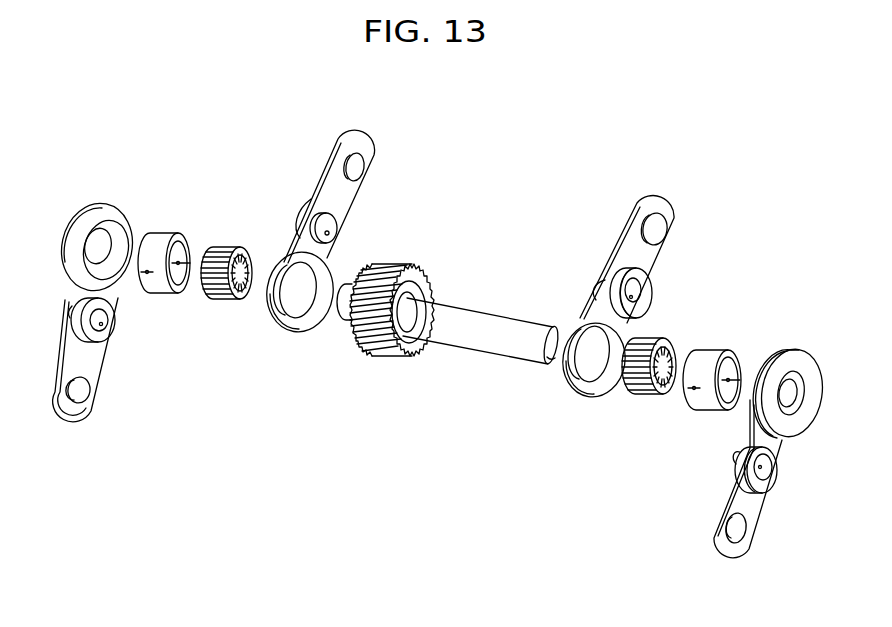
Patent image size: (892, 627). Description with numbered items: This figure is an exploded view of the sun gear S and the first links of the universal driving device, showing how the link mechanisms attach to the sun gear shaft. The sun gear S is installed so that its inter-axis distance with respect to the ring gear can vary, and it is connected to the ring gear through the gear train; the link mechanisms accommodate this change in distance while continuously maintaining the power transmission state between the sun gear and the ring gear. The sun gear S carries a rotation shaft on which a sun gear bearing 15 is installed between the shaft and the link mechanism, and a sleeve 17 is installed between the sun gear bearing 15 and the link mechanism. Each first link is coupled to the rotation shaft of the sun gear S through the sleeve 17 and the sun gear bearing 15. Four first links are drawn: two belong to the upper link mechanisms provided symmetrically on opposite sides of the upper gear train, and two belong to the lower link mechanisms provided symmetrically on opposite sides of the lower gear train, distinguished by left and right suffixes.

The sleeve 17 is at (162, 235).
The sun gear bearing 15 is at (220, 250).
The sun gear S is at (373, 337).